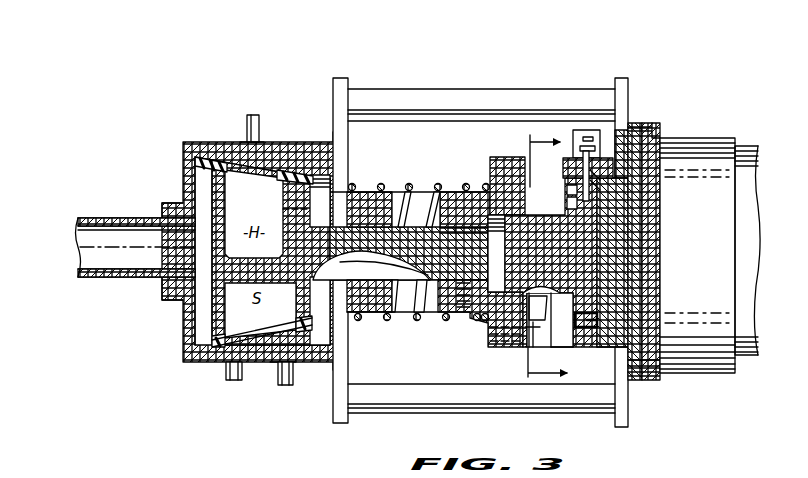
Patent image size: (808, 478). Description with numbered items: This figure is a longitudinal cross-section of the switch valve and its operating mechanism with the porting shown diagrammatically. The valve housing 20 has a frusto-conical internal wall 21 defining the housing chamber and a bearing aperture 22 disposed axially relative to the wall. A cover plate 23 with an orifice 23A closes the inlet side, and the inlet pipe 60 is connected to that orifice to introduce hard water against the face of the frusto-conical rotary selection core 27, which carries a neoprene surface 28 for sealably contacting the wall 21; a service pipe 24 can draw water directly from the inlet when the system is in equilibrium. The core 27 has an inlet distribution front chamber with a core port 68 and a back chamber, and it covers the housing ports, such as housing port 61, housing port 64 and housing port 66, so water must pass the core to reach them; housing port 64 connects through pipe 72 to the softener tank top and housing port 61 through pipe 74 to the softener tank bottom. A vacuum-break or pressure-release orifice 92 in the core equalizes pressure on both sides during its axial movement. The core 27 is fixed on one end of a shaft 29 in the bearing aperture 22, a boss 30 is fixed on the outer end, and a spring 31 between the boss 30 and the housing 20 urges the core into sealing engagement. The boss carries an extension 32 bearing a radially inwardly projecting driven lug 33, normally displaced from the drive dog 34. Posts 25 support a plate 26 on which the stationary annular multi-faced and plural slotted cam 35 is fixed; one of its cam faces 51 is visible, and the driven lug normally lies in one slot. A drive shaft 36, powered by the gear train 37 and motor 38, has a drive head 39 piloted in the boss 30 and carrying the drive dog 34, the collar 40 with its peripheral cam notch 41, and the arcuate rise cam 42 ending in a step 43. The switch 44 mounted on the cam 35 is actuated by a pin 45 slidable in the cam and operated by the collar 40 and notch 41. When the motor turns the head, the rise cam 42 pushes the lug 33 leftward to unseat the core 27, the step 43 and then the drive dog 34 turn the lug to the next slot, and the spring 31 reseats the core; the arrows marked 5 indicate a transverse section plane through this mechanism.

The section line 5- 5 is at (535, 250).
The valve housing 20 is at (182, 342).
The frusto-conical internal wall 21 is at (197, 163).
The bearing aperture 22 is at (362, 227).
The cover plate 23 is at (172, 303).
The orifice 23A is at (166, 215).
The service pipe 24 is at (285, 388).
The posts 25 is at (552, 98).
The plate 26 is at (629, 118).
The frusto-conical rotary selection core 27 is at (314, 328).
The neoprene surface 28 is at (288, 170).
The shaft 29 is at (376, 232).
The boss 30 is at (491, 168).
The spring 31 is at (409, 188).
The extension 32 is at (530, 340).
The driven lug 33 is at (563, 345).
The drive dog 34 is at (549, 314).
The stationary annular multi-faced and plural slotted cam 35 is at (609, 152).
The drive shaft 36 is at (623, 266).
The gear train 37 is at (695, 147).
The motor 38 is at (760, 160).
The drive head 39 is at (532, 266).
The collar 40 is at (630, 312).
The cam notch 41 is at (592, 183).
The arcuate rise cam 42 is at (574, 208).
The step 43 is at (567, 193).
The switch 44 is at (580, 148).
The pin 45 is at (593, 175).
The cam face 51 is at (565, 171).
The inlet pipe 60 is at (122, 268).
The housing port 61 is at (226, 363).
The housing port 64 is at (254, 152).
The housing port 66 is at (286, 355).
The core port 68 is at (254, 214).
The pipe 72 is at (254, 114).
The pipe 74 is at (231, 383).
The vacuum-break or pressure-release orifice 92 is at (296, 206).